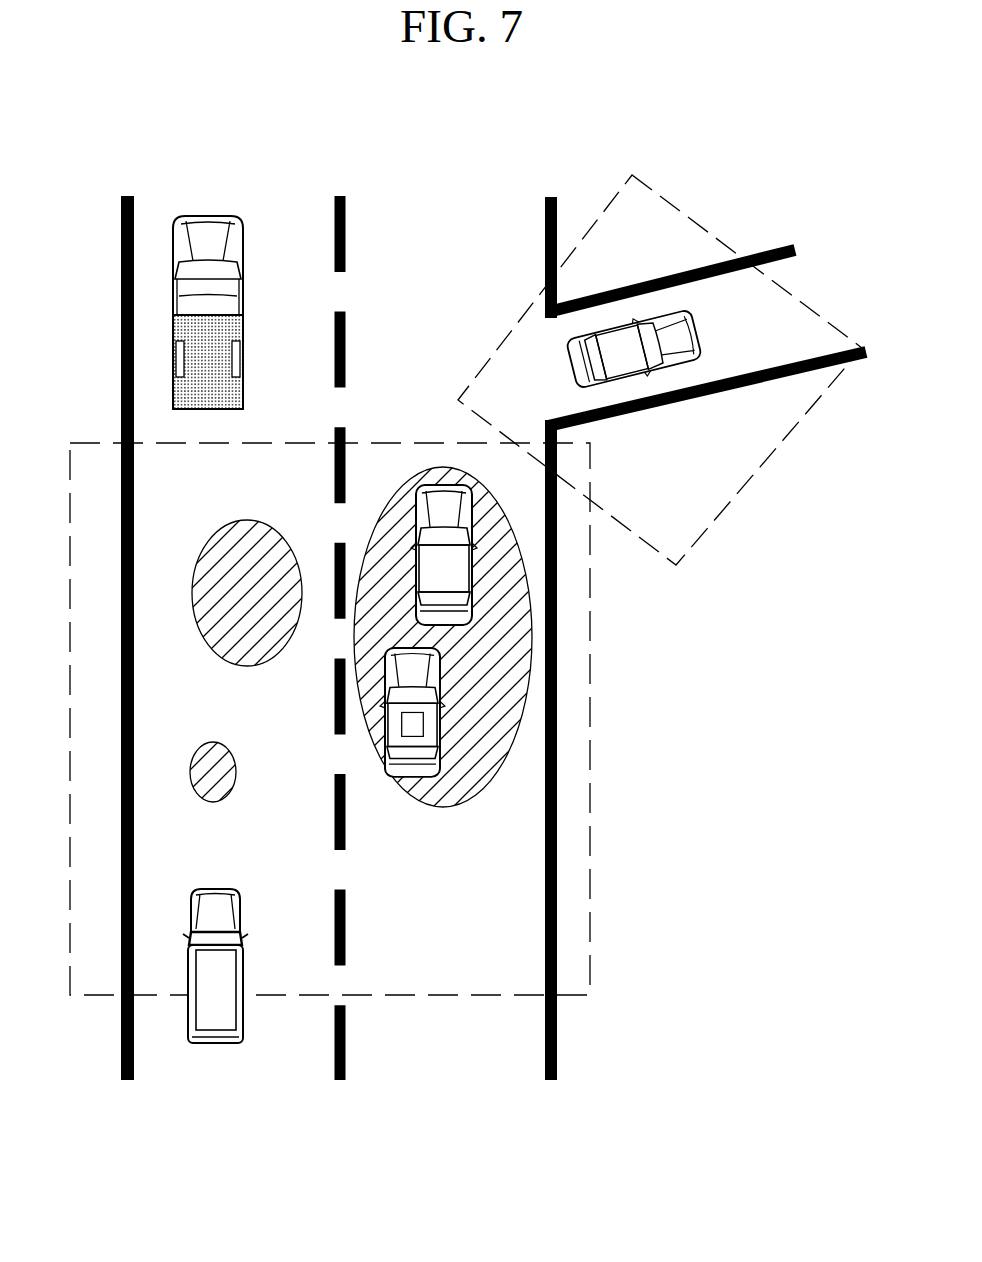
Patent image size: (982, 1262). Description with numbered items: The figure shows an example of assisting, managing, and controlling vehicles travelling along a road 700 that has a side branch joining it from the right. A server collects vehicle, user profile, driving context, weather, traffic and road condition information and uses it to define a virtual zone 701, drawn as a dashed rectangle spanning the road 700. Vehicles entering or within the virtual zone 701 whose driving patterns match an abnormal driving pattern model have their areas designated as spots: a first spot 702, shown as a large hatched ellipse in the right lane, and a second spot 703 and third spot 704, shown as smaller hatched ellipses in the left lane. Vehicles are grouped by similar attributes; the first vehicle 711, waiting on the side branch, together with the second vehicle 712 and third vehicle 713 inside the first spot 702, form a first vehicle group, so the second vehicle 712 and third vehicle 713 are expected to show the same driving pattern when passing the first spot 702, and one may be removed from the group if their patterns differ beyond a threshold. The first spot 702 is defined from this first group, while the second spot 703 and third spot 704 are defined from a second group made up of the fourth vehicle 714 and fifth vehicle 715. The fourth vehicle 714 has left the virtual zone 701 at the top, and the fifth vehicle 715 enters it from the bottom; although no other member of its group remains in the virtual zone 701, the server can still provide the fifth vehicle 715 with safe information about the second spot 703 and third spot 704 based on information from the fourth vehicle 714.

The road 700 is at (557, 1037).
The virtual zone 701 is at (590, 718).
The first spot 702 is at (440, 808).
The second spot 703 is at (245, 520).
The third spot 704 is at (213, 743).
The first vehicle 711 is at (700, 335).
The second vehicle 712 is at (437, 485).
The third vehicle 713 is at (398, 777).
The fourth vehicle 714 is at (212, 216).
The fifth vehicle 715 is at (217, 889).